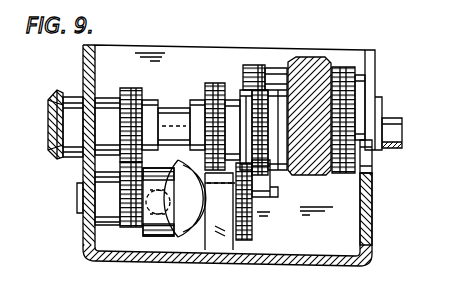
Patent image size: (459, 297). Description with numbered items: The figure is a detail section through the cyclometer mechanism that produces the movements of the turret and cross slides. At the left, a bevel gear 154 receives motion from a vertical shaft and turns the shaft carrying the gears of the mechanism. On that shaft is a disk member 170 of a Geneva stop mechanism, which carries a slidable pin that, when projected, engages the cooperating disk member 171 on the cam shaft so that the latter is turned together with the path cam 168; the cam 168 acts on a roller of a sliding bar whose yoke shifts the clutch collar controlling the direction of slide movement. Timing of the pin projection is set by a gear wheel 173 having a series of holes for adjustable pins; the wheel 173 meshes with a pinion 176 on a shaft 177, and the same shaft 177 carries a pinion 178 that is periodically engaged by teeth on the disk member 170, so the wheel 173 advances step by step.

The bevel gear 154 is at (48, 126).
The path cam 168 is at (160, 232).
The disk member 170 is at (240, 95).
The disk member 171 is at (250, 224).
The wheel 173 is at (345, 198).
The pinion 176 is at (350, 65).
The shaft 177 is at (280, 67).
The pinion 178 is at (262, 65).